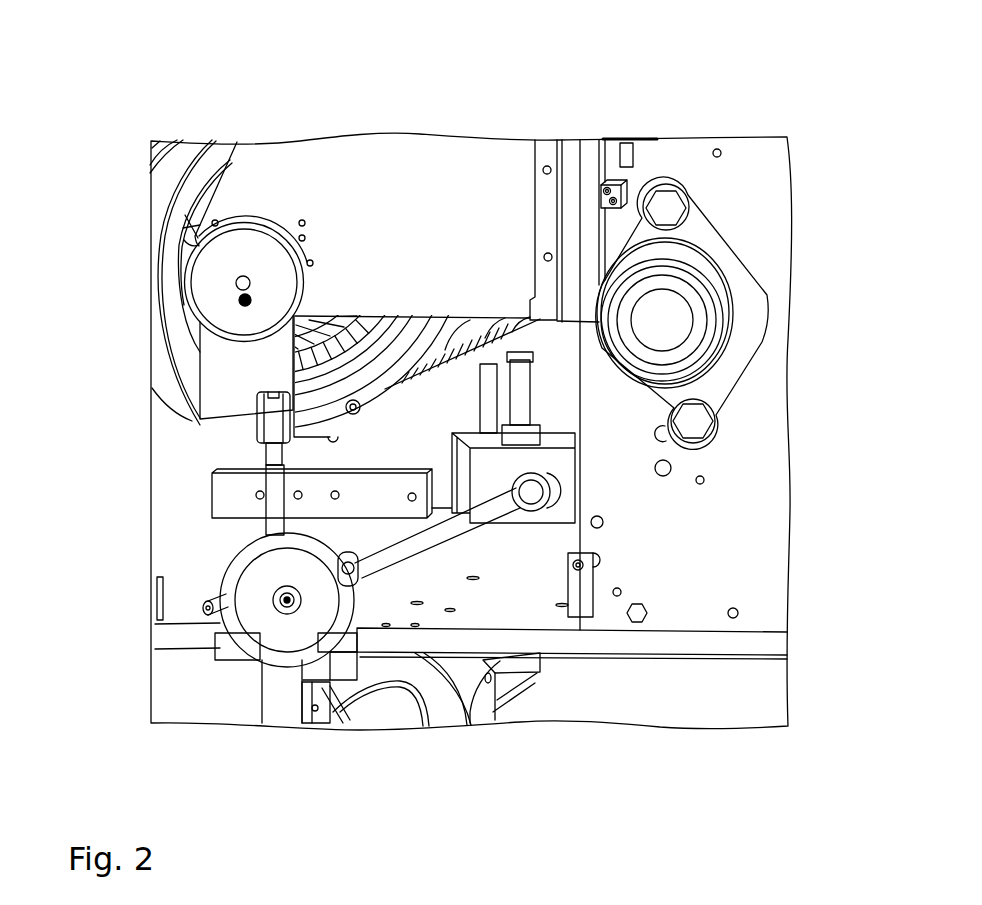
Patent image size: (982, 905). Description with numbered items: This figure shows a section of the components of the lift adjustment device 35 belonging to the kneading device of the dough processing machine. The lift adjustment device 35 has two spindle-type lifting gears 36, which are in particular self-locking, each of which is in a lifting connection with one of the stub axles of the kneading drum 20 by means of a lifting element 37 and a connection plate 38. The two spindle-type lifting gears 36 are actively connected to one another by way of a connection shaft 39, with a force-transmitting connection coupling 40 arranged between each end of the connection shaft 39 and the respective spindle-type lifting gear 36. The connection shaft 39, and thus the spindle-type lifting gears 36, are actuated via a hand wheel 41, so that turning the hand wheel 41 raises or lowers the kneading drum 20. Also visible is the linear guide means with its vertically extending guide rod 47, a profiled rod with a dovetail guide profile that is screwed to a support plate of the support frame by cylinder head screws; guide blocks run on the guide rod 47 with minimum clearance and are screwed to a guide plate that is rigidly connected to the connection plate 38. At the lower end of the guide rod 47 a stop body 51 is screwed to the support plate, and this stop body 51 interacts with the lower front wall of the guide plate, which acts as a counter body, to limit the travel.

The kneading drum 20 is at (177, 384).
The lift adjustment device 35 is at (234, 548).
The spindle-type lifting gear 36 is at (250, 503).
The lifting element 37 is at (262, 413).
The connection plate 38 is at (210, 349).
The connection shaft 39 is at (453, 527).
The joint 40 is at (563, 490).
The hand wheel 41 is at (225, 594).
The guide rod 47 is at (623, 145).
The stop body 51 is at (605, 185).